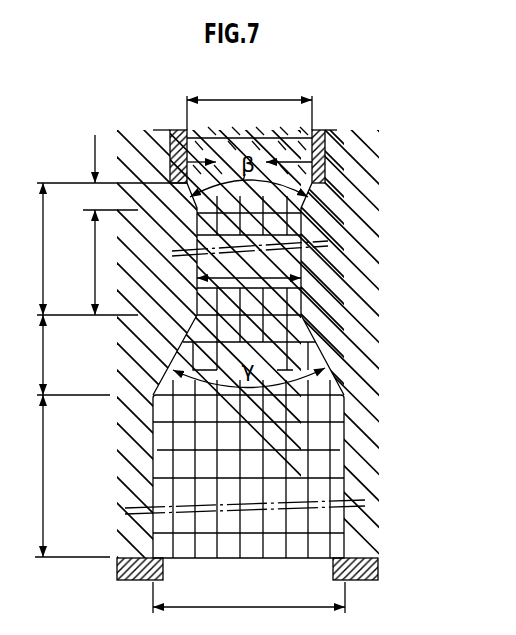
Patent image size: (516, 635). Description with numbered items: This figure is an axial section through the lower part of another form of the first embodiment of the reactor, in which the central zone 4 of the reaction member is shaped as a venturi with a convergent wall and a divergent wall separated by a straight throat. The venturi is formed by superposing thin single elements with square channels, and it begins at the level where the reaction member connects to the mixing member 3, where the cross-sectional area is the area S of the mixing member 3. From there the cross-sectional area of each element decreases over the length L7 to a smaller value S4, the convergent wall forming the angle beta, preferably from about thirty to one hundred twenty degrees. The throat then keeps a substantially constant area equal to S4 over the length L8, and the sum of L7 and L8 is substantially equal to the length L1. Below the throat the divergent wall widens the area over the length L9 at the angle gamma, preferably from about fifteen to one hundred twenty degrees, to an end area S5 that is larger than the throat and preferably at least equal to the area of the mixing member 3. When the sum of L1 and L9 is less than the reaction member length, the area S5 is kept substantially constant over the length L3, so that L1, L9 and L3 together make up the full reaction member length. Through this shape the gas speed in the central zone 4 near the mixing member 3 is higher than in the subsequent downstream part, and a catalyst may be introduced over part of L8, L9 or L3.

The mixing member 3 is at (315, 127).
The central zone of the reaction member 4 is at (348, 408).
The cross-sectional area of the mixing member S is at (249, 101).
The throat cross-sectional area S4 is at (249, 265).
The cross-sectional area at the end of the divergent wall S5 is at (249, 597).
The length L1 is at (27, 249).
The length L3 is at (26, 476).
The length L7 is at (80, 159).
The length L8 is at (80, 262).
The length L9 is at (28, 355).